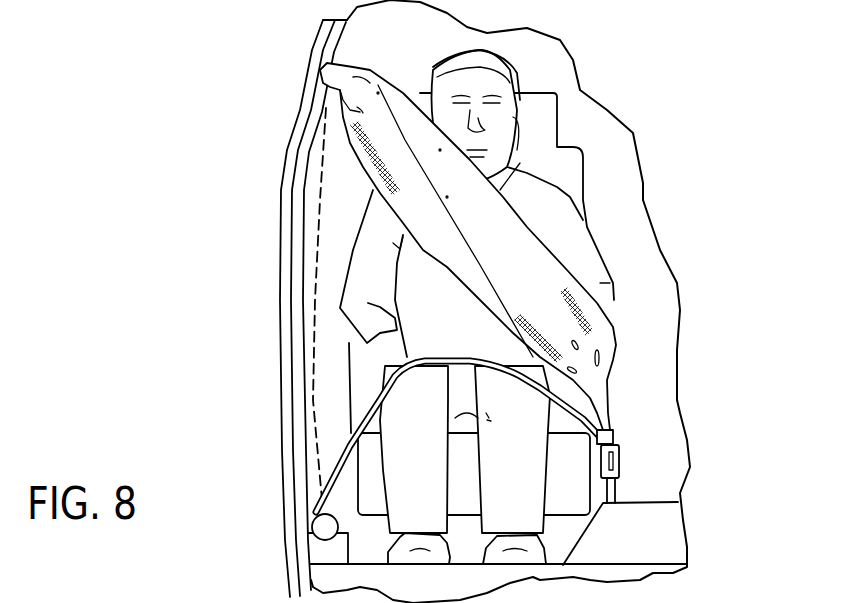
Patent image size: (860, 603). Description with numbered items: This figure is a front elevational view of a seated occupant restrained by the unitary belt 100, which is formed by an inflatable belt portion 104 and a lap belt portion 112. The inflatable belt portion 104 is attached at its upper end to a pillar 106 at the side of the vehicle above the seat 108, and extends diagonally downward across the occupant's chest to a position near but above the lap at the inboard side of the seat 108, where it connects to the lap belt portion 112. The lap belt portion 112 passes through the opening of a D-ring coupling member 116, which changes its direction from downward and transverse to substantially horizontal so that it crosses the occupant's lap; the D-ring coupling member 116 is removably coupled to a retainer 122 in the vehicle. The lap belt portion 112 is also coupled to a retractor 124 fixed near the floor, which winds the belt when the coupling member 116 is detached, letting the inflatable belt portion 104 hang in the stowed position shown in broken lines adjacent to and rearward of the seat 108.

The unitary belt 100 is at (314, 378).
The inflatable belt portion 104 is at (517, 240).
The pillar 106 is at (279, 243).
The seat 108 is at (567, 497).
The lap belt portion 112 is at (347, 447).
The D-ring coupling member 116 is at (612, 435).
The retainer 122 is at (620, 460).
The retractor 124 is at (320, 552).